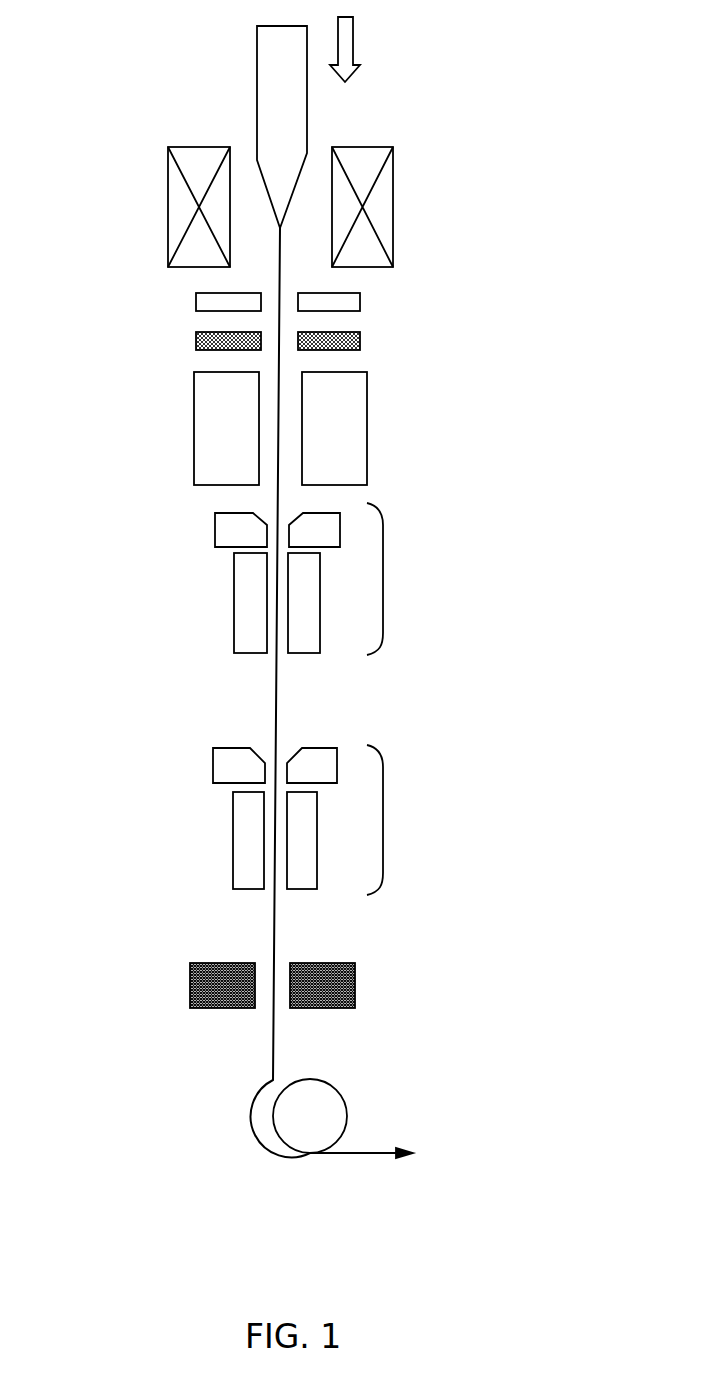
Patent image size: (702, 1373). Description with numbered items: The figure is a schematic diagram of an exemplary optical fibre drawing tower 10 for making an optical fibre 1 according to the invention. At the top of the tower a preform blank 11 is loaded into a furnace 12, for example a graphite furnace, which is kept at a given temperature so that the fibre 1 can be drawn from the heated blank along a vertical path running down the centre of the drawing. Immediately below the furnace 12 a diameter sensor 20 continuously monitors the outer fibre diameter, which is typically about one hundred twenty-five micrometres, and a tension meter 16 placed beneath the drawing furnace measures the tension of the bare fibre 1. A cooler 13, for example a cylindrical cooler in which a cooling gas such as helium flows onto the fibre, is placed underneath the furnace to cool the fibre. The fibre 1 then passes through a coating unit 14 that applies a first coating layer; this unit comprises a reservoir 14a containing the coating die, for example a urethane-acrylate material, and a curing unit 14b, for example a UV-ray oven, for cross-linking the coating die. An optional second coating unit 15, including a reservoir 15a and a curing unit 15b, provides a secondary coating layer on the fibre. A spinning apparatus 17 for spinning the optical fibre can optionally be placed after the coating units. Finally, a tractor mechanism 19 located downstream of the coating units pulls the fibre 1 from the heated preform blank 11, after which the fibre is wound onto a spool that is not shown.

The fiber 1 is at (278, 267).
The optical fibre drawing tower 10 is at (485, 77).
The preform blank 11 is at (287, 125).
The furnace 12 is at (380, 228).
The cooler 13 is at (367, 417).
The coating unit 14 is at (321, 579).
The reservoir 14a is at (230, 530).
The curing unit 14b is at (243, 598).
The second coating unit 15 is at (323, 820).
The reservoir 15a is at (222, 767).
The curing unit 15b is at (238, 833).
The tension meter 16 is at (360, 340).
The spinning apparatus 17 is at (362, 993).
The tractor mechanism 19 is at (272, 1122).
The diameter sensor 20 is at (360, 297).